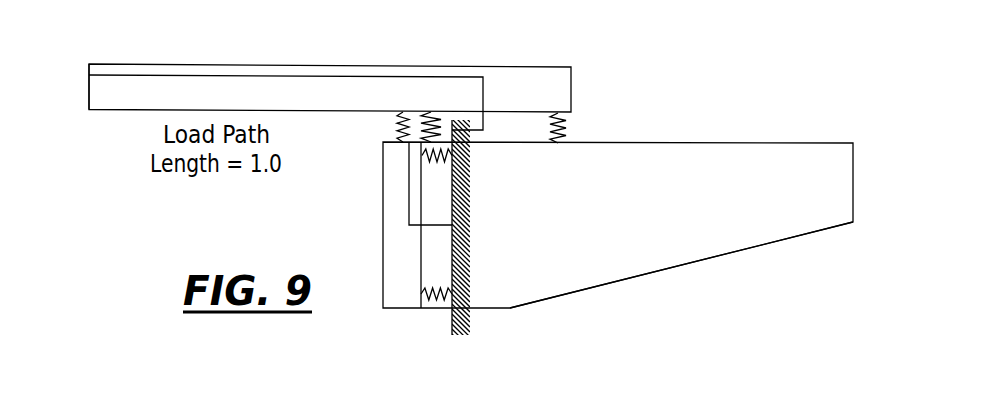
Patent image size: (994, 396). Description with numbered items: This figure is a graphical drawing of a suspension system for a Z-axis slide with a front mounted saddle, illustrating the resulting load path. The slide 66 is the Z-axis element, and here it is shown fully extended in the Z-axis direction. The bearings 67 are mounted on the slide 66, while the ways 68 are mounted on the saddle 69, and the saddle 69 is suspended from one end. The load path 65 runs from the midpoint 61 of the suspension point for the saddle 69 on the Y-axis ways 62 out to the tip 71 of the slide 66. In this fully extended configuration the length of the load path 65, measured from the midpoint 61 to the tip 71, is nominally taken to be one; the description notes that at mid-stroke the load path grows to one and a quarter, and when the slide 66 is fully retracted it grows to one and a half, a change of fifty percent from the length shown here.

The midpoint 61 is at (452, 227).
The Y-axis ways 62 is at (452, 255).
The load path 65 is at (269, 75).
The slide 66 is at (413, 62).
The bearings 67 is at (413, 113).
The ways 68 is at (710, 143).
The saddle 69 is at (693, 238).
The tip 71 is at (89, 96).